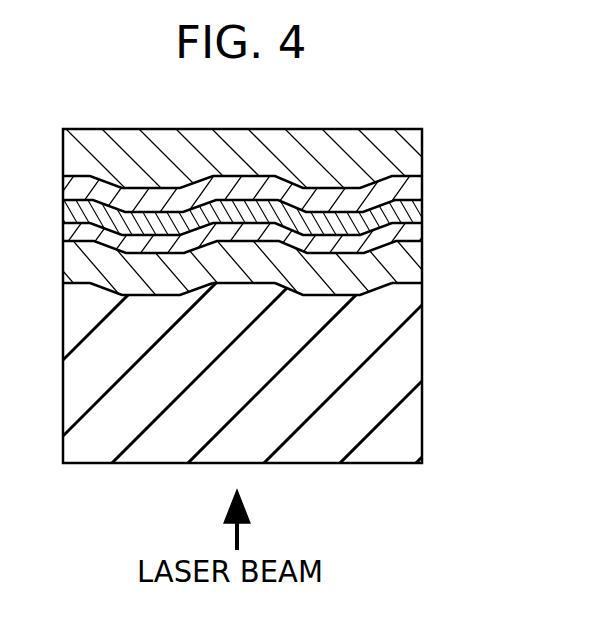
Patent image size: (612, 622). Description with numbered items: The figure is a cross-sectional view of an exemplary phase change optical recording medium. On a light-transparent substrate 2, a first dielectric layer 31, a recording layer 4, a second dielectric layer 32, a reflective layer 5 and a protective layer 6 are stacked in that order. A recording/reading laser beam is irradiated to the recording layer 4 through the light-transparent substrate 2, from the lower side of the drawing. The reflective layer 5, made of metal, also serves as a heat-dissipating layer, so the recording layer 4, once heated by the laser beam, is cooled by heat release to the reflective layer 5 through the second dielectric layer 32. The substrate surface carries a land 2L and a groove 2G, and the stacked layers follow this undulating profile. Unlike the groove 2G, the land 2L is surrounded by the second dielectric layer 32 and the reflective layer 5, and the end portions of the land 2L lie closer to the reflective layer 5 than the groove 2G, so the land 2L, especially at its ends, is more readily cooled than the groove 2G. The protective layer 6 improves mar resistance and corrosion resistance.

The protective layer 6 is at (423, 155).
The reflective layer 5 is at (423, 190).
The second dielectric layer 32 is at (423, 208).
The recording layer 4 is at (423, 233).
The first dielectric layer 31 is at (423, 265).
The light-transparent substrate 2 is at (415, 366).
The land 2L is at (242, 285).
The groove 2G is at (318, 297).